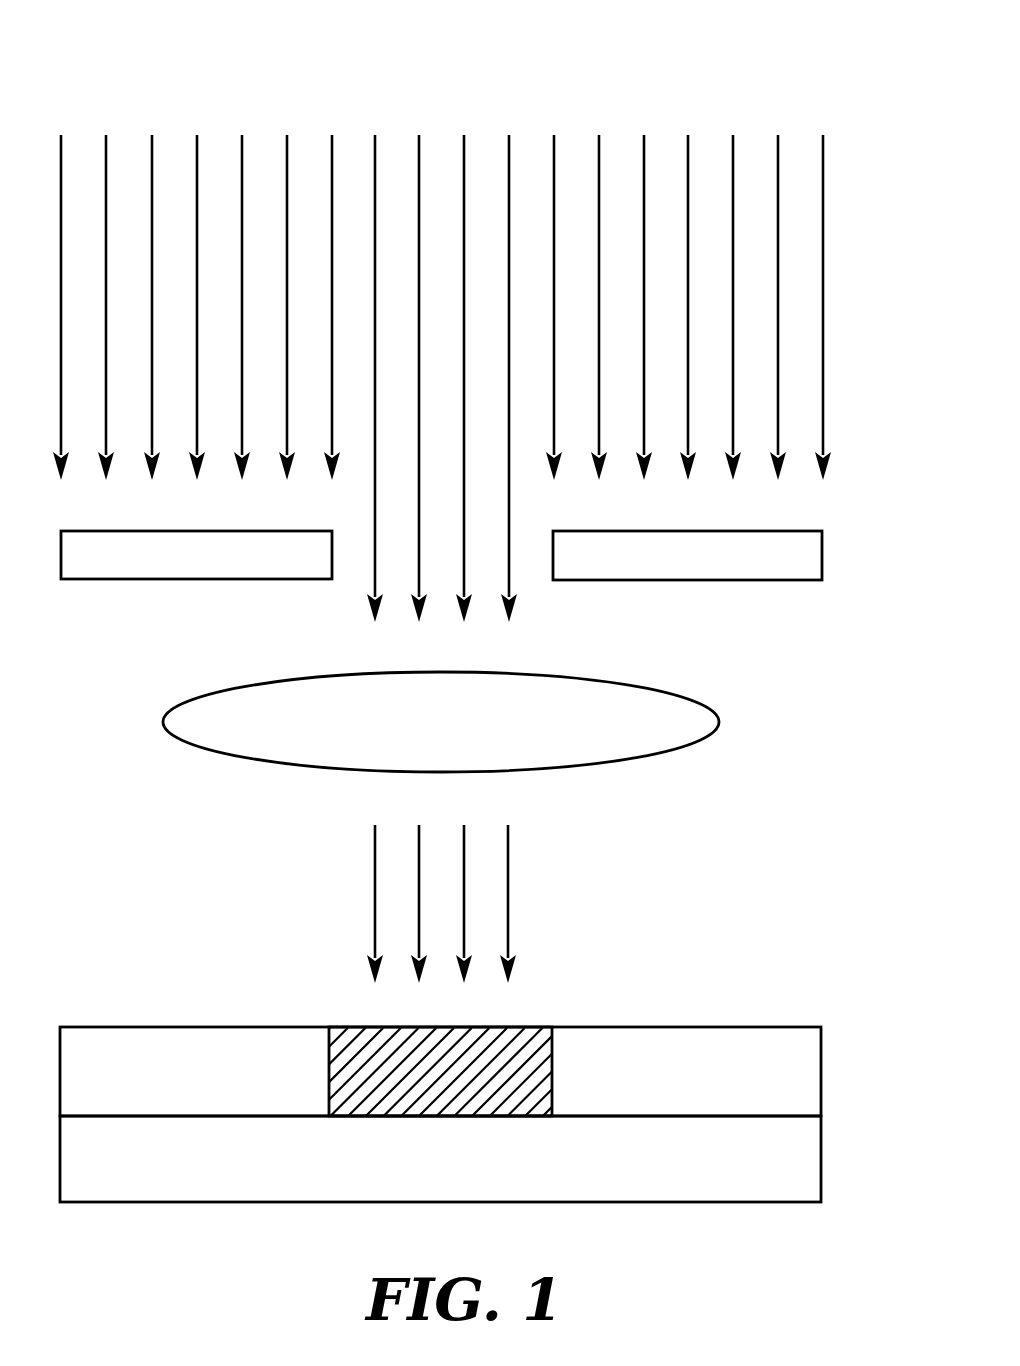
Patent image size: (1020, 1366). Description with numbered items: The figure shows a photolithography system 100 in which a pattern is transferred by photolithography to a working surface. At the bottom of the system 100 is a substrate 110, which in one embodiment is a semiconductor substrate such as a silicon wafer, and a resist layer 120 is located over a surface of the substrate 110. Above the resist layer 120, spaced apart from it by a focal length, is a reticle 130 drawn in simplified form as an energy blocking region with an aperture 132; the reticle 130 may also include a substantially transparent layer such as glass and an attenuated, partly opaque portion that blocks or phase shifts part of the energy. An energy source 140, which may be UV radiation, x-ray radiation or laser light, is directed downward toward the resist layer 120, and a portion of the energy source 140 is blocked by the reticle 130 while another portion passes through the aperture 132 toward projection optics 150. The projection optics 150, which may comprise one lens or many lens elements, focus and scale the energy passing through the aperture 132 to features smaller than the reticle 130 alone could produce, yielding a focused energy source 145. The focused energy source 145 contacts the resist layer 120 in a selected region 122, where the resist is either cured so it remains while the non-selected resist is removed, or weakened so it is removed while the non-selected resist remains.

The photolithography system 100 is at (144, 70).
The substrate 110 is at (822, 1162).
The resist layer 120 is at (822, 1075).
The selected region 122 is at (520, 1033).
The reticle 130 is at (824, 558).
The aperture 132 is at (350, 572).
The energy source 140 is at (825, 310).
The focused energy source 145 is at (510, 907).
The projection optics 150 is at (615, 697).